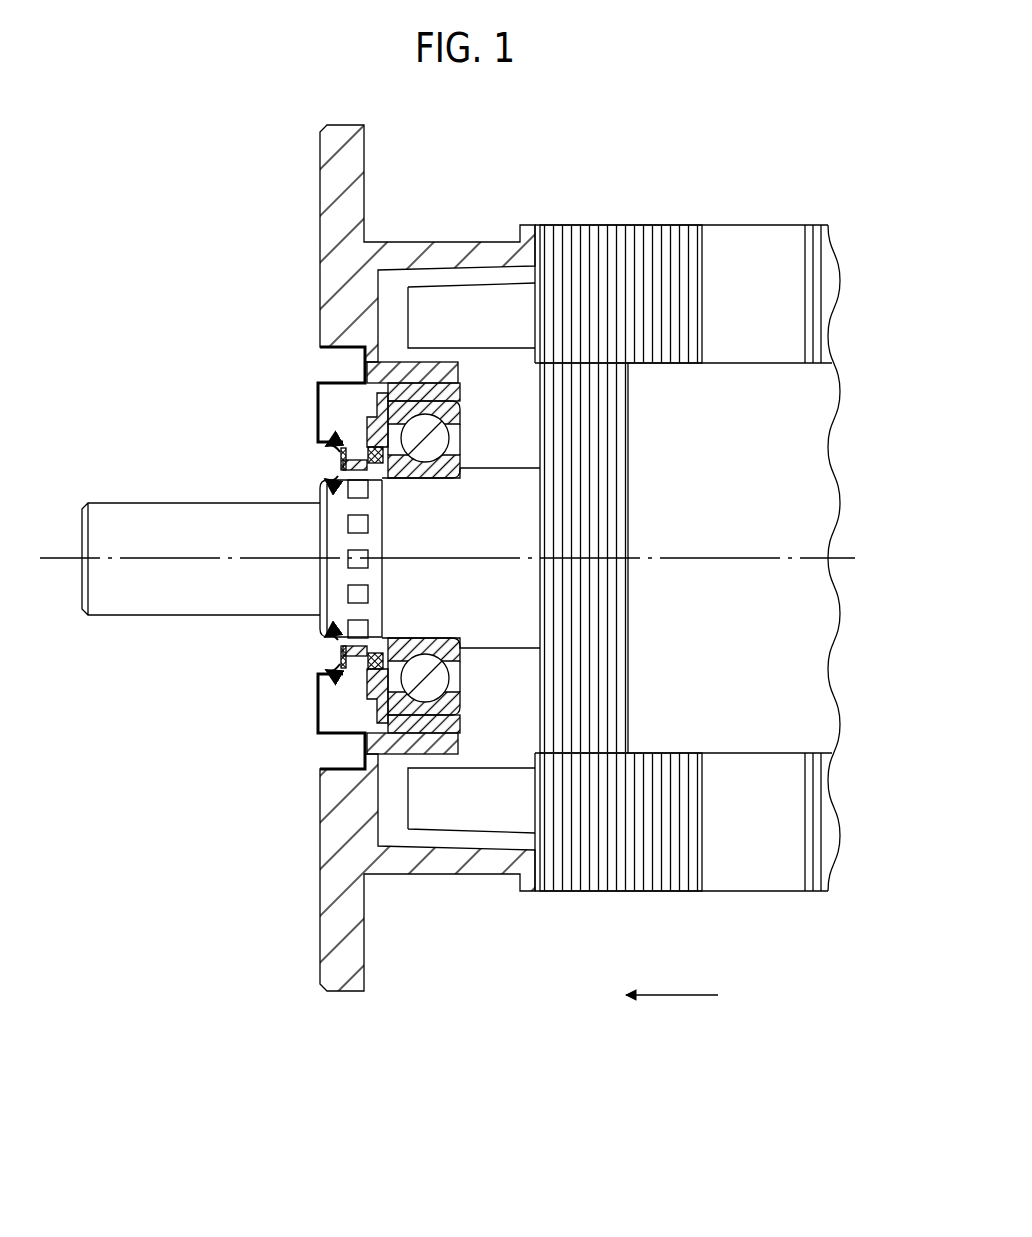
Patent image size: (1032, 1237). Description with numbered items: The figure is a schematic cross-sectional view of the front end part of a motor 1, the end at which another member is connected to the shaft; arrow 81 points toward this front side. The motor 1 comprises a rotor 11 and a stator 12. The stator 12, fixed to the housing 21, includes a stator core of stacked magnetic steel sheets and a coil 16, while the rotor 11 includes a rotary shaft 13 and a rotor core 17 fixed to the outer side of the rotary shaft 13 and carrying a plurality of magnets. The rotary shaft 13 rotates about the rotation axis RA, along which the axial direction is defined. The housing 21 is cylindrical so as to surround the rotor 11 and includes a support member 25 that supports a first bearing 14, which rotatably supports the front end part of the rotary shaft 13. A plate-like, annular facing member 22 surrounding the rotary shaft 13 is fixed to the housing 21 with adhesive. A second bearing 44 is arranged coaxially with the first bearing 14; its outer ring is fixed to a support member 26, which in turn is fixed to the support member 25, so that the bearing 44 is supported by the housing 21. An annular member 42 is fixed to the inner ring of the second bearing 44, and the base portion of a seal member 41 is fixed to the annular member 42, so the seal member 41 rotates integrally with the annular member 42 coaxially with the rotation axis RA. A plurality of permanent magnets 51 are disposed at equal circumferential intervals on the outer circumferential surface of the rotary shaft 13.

The motor 1 is at (724, 182).
The rotor 11 is at (593, 760).
The stator 12 is at (820, 896).
The rotary shaft 13 is at (112, 603).
The first bearing 14 is at (422, 408).
The coil 16 is at (512, 295).
The rotor core 17 is at (782, 731).
The housing 21 is at (492, 248).
The facing member 22 is at (333, 382).
The support member 25 is at (403, 392).
The support member 26 is at (372, 430).
The seal member 41 is at (340, 454).
The annular member 42 is at (338, 476).
The second bearing 44 is at (372, 450).
The magnets 51 is at (322, 523).
The arrow 81 is at (683, 995).
The rotation axis RA is at (848, 553).